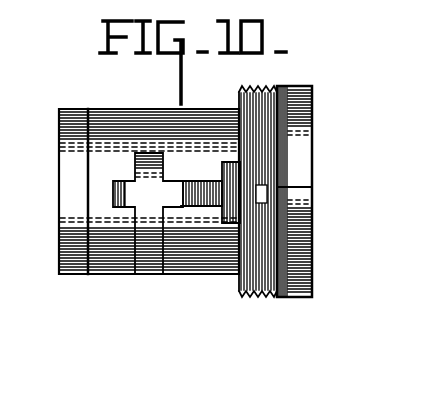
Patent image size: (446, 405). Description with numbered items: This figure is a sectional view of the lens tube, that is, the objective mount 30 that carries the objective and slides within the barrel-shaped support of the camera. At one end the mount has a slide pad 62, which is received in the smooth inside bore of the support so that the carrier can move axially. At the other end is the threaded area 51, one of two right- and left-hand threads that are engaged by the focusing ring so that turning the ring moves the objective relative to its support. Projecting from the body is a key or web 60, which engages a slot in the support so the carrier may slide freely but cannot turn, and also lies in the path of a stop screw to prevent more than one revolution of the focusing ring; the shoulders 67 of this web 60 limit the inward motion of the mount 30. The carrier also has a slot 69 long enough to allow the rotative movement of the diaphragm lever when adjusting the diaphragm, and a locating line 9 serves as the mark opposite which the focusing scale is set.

The locating line 9 is at (302, 188).
The objective mount 30 is at (300, 141).
The threaded area 51 is at (258, 87).
The key 60 is at (203, 190).
The slide pad 62 is at (58, 143).
The shoulders 67 is at (220, 175).
The slot 69 is at (128, 223).